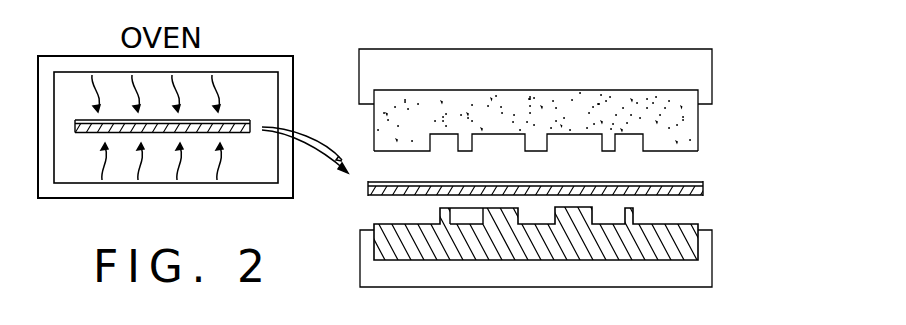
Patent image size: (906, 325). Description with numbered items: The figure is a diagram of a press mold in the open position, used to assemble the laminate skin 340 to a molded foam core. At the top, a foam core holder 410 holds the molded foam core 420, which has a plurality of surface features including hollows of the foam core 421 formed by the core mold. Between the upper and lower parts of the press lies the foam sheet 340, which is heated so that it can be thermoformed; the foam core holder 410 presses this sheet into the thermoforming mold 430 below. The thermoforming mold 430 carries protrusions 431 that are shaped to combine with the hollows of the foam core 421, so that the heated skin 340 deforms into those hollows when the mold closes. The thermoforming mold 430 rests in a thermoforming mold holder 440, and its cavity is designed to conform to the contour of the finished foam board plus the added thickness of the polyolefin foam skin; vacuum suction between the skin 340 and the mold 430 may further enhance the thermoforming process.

The foam core holder 410 is at (703, 60).
The molded foam core 420 is at (700, 123).
The hollows of the foam core 421 is at (498, 142).
The laminate skin 340 is at (705, 185).
The thermoforming mold 430 is at (692, 224).
The protrusions of the thermoforming mold 431 is at (483, 209).
The thermoforming mold holder 440 is at (707, 275).